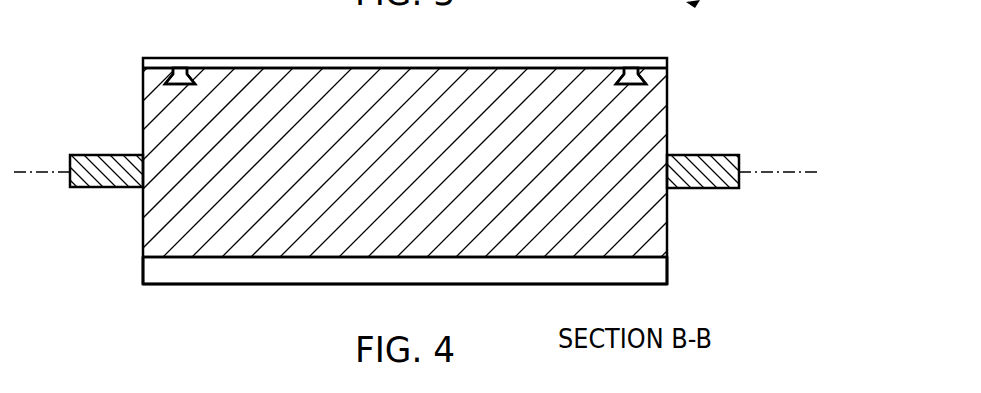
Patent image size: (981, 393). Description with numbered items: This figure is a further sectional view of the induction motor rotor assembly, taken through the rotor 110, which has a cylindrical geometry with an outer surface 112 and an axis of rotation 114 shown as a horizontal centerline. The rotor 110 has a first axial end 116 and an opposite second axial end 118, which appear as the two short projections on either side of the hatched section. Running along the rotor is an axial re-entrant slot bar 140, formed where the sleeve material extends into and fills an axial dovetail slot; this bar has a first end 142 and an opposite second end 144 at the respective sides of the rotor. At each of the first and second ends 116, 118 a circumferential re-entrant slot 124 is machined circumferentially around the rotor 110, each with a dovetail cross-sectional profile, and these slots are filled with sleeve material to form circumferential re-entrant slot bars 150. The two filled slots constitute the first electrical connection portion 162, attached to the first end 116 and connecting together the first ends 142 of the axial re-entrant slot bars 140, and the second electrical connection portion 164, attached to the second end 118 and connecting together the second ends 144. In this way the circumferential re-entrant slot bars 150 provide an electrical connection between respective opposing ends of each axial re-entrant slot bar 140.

The rotor 110 is at (645, 109).
The outer surface 112 is at (478, 285).
The axis of rotation 114 is at (790, 172).
The first axial end 116 is at (143, 214).
The second axial end 118 is at (668, 212).
The circumferential re-entrant slot 124 is at (168, 77).
The axial re-entrant slot bar 140 is at (313, 270).
The first end 142 is at (143, 268).
The second end 144 is at (668, 272).
The circumferential re-entrant slot bar 150 is at (179, 69).
The first electrical connection portion 162 is at (192, 70).
The second electrical connection portion 164 is at (619, 72).